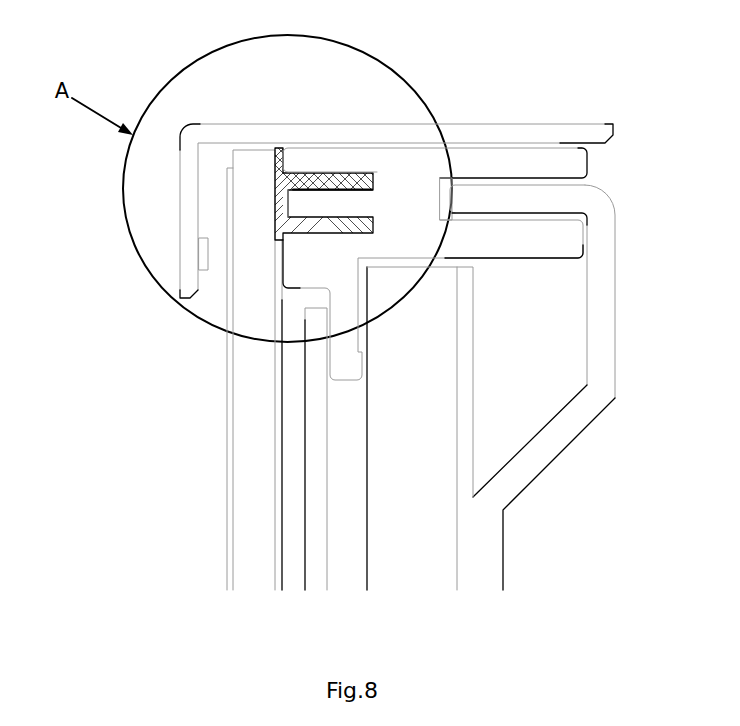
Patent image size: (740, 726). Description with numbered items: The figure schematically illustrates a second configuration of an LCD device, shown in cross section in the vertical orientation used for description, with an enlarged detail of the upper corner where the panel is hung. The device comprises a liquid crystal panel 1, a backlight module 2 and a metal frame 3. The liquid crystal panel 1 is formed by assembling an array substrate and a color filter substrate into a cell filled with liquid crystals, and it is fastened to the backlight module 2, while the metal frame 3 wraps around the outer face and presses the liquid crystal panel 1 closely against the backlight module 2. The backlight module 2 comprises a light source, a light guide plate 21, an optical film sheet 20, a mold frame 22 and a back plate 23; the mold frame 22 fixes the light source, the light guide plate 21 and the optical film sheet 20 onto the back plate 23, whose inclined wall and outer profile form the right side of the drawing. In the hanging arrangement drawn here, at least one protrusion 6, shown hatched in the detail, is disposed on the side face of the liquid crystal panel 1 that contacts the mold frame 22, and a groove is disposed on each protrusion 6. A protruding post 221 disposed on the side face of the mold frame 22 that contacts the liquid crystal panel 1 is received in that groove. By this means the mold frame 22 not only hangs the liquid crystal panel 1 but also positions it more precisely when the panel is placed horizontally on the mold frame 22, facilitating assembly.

The liquid crystal panel 1 is at (242, 365).
The backlight module 2 is at (544, 503).
The metal frame 3 is at (193, 148).
The protrusion 6 is at (307, 177).
The optical film sheet 20 is at (310, 547).
The light guide plate 21 is at (403, 537).
The mold frame 22 is at (518, 168).
The back plate 23 is at (573, 413).
The protruding post 221 is at (358, 202).